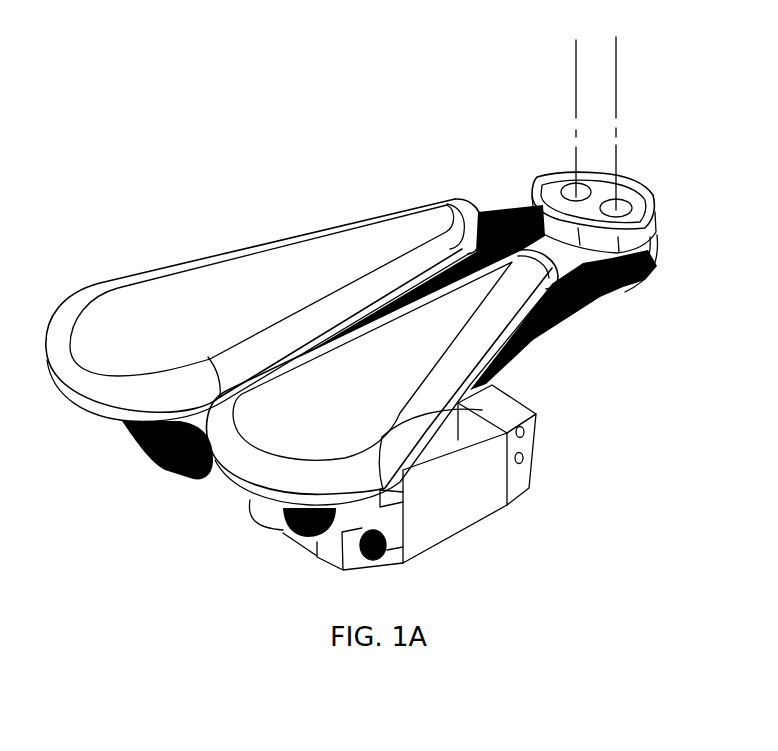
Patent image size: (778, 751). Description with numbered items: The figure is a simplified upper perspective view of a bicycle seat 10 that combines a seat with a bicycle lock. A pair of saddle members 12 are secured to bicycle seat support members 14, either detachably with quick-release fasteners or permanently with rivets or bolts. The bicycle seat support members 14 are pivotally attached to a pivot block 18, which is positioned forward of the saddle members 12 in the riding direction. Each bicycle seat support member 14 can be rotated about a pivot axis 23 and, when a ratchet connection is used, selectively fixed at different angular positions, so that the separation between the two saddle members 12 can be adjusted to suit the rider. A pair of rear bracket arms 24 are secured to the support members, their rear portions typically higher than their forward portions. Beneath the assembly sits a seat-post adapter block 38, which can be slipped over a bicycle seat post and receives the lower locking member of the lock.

The bicycle seat 10 is at (285, 180).
The saddle member 12 is at (227, 281).
The bicycle seat support member 14 is at (482, 212).
The pivot block 18 is at (627, 197).
The pivot axis 23 is at (617, 88).
The rear bracket arm 24 is at (165, 470).
The seat-post adapter block 38 is at (462, 510).